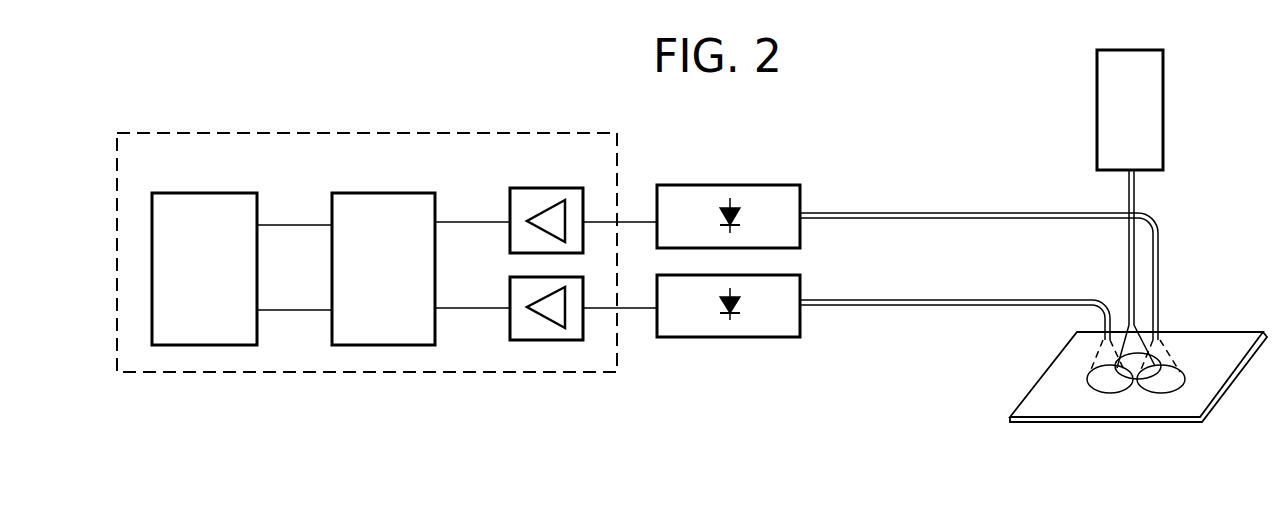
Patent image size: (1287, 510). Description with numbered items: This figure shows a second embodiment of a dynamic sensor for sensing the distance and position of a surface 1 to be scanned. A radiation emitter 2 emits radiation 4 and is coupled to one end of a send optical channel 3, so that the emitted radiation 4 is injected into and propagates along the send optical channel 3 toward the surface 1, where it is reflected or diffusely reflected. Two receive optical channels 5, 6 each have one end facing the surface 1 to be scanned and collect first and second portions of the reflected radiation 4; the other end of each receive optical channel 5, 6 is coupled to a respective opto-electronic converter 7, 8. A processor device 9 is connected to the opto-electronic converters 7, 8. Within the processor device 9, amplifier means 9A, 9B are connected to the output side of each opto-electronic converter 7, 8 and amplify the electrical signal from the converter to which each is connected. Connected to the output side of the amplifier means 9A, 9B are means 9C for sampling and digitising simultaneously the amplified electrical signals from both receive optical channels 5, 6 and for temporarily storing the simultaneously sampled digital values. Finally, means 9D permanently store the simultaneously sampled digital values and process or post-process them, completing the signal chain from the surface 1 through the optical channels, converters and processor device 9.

The surface to be scanned 1 is at (1220, 340).
The radiation emitter 2 is at (1153, 110).
The send optical channel 3 is at (1130, 253).
The radiation 4 is at (1136, 333).
The receive optical channel 5 is at (923, 305).
The receive optical channel 6 is at (917, 210).
The opto-electronic converter 7 is at (700, 195).
The opto-electronic converter 8 is at (690, 322).
The processor device 9 is at (297, 144).
The amplifier means 9A is at (533, 195).
The amplifier means 9B is at (540, 335).
The sampling and digitising means 9C is at (365, 205).
The storing and processing means 9D is at (198, 210).